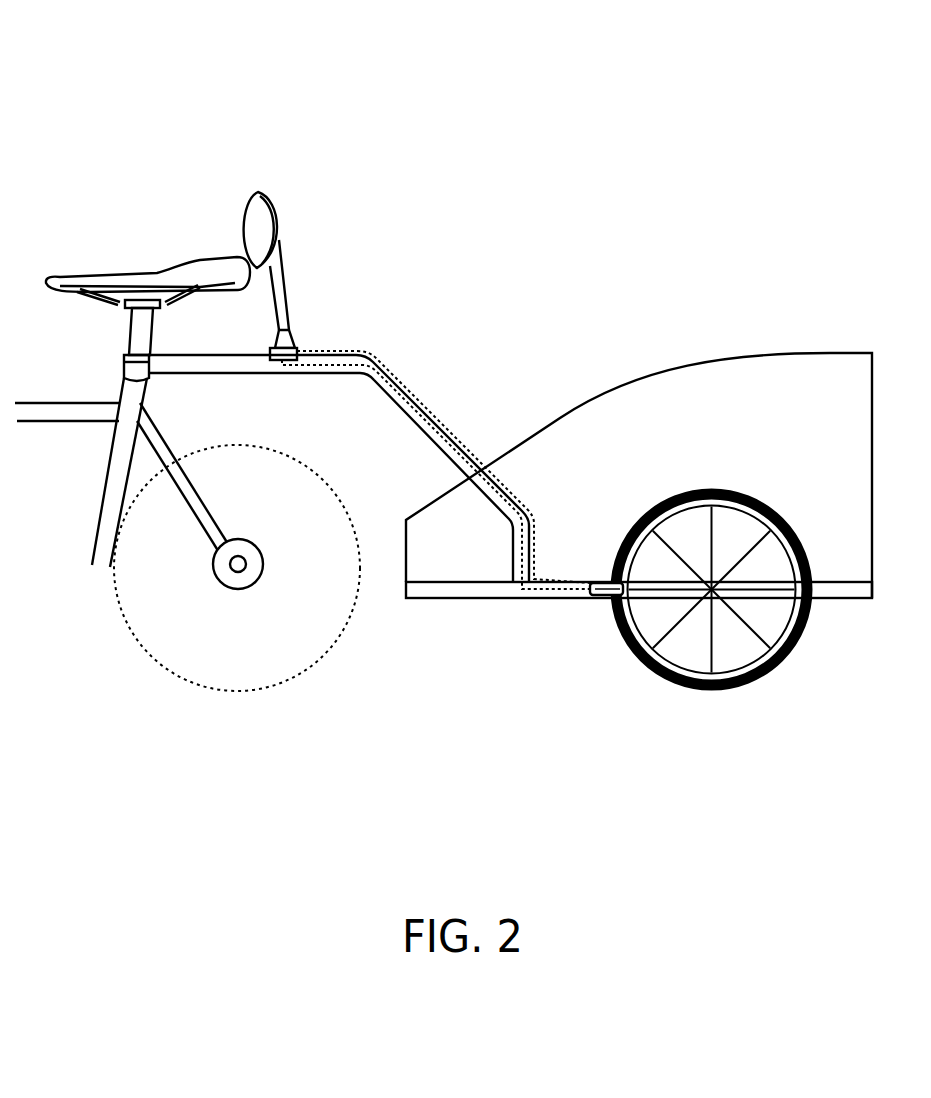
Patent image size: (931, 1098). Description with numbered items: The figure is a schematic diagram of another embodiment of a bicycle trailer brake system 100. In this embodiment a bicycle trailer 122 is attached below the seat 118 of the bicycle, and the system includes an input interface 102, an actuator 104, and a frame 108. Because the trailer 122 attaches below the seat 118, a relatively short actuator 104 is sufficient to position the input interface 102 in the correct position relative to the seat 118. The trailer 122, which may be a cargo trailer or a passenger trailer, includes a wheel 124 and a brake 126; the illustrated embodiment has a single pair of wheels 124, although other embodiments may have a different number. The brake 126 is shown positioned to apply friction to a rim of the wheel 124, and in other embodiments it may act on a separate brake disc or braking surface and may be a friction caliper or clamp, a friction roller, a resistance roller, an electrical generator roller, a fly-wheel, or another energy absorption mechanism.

The bicycle trailer brake system 100 is at (166, 51).
The input interface 102 is at (242, 200).
The actuator 104 is at (288, 303).
The frame 108 is at (473, 600).
The seat 118 is at (173, 266).
The trailer 122 is at (637, 385).
The wheel 124 is at (680, 490).
The brake 126 is at (603, 580).